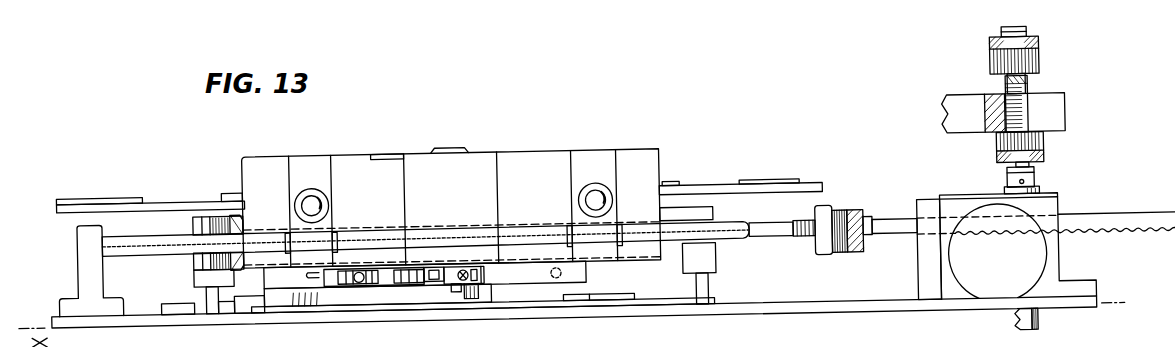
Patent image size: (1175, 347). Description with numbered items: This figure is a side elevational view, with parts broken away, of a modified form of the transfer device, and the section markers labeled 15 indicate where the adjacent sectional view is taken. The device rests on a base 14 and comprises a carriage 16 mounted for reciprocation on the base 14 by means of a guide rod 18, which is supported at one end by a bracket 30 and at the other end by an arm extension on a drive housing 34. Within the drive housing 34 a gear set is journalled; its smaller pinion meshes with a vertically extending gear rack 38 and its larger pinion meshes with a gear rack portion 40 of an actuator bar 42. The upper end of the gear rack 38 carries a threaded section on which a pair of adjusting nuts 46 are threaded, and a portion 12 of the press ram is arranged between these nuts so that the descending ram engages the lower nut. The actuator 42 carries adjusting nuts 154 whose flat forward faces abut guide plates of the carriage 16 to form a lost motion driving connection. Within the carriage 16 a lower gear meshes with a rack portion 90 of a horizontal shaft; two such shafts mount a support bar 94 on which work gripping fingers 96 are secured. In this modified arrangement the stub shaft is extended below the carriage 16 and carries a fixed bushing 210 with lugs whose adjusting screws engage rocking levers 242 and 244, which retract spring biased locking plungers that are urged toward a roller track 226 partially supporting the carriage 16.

The press ram portion 12 is at (1061, 131).
The base 14 is at (374, 318).
The section line 15- 15 is at (452, 146).
The carriage 16 is at (556, 162).
The guide rod 18 is at (736, 256).
The bracket 30 is at (77, 270).
The drive housing 34 is at (1059, 218).
The vertical gear rack 38 is at (1039, 341).
The gear rack portion 40 is at (1117, 253).
The actuator bar 42 is at (779, 255).
The adjusting nuts 46 is at (1043, 81).
The rack portion 90 is at (312, 208).
The support bar 94 is at (170, 205).
The work gripping fingers 96 is at (128, 200).
The adjusting nuts 154 is at (200, 225).
The fixed bushing 210 is at (445, 302).
The roller track 226 is at (272, 312).
The rocking lever 242 is at (429, 289).
The rocking lever 244 is at (486, 293).